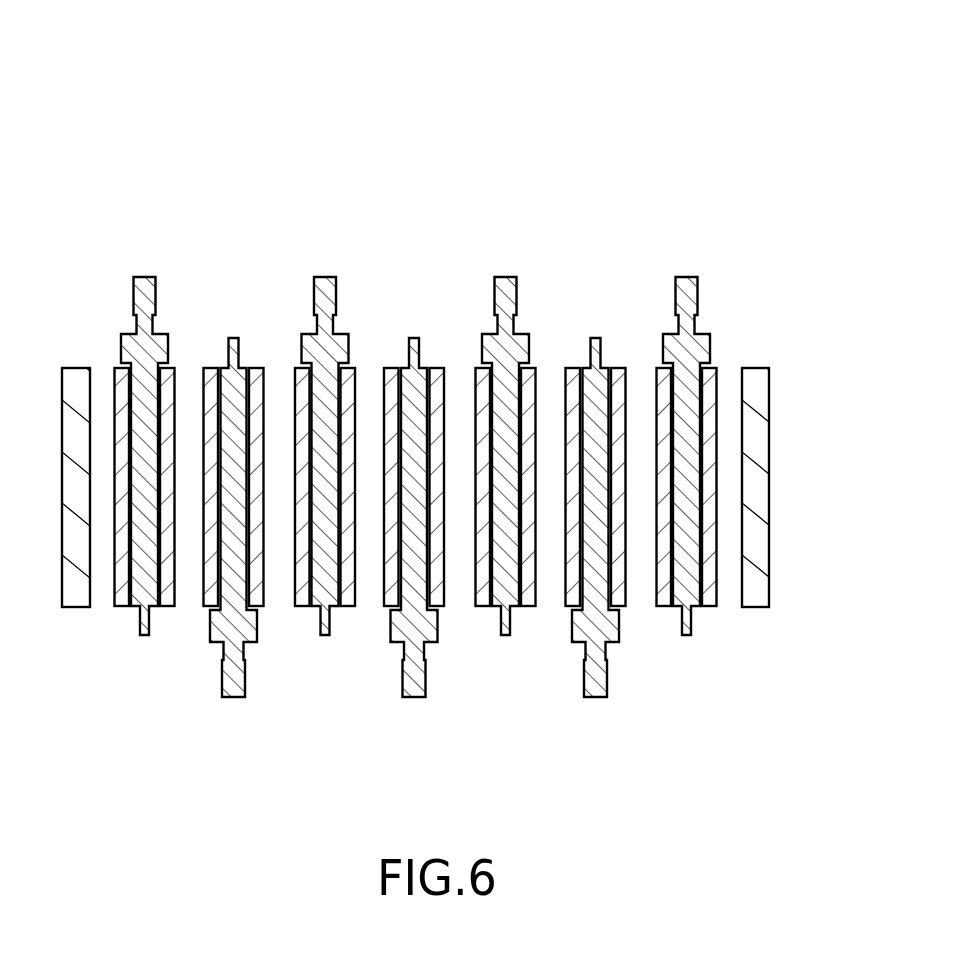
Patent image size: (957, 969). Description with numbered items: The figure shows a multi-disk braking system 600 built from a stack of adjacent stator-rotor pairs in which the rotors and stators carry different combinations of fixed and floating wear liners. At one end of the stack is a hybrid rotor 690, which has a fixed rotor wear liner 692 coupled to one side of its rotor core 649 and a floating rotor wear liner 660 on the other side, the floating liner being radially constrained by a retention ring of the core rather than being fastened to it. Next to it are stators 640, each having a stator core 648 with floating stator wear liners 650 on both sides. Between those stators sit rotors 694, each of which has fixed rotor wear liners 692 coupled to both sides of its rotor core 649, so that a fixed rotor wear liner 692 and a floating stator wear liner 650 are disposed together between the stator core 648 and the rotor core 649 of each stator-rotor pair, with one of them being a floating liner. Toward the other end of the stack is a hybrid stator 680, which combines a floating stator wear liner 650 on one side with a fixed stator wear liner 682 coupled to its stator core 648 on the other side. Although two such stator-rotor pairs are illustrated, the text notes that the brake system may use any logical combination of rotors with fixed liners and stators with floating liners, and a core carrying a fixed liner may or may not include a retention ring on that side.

The multi-disk braking system 600 is at (118, 116).
The stator 640 is at (414, 742).
The stator core 648 is at (230, 620).
The rotor core 649 is at (148, 348).
The floating stator wear liner 650 is at (207, 597).
The floating rotor wear liner 660 is at (170, 377).
The hybrid stator 680 is at (597, 742).
The fixed stator wear liner 682 is at (575, 597).
The hybrid rotor 690 is at (143, 233).
The fixed rotor wear liner 692 is at (124, 378).
The rotor 694 is at (504, 232).